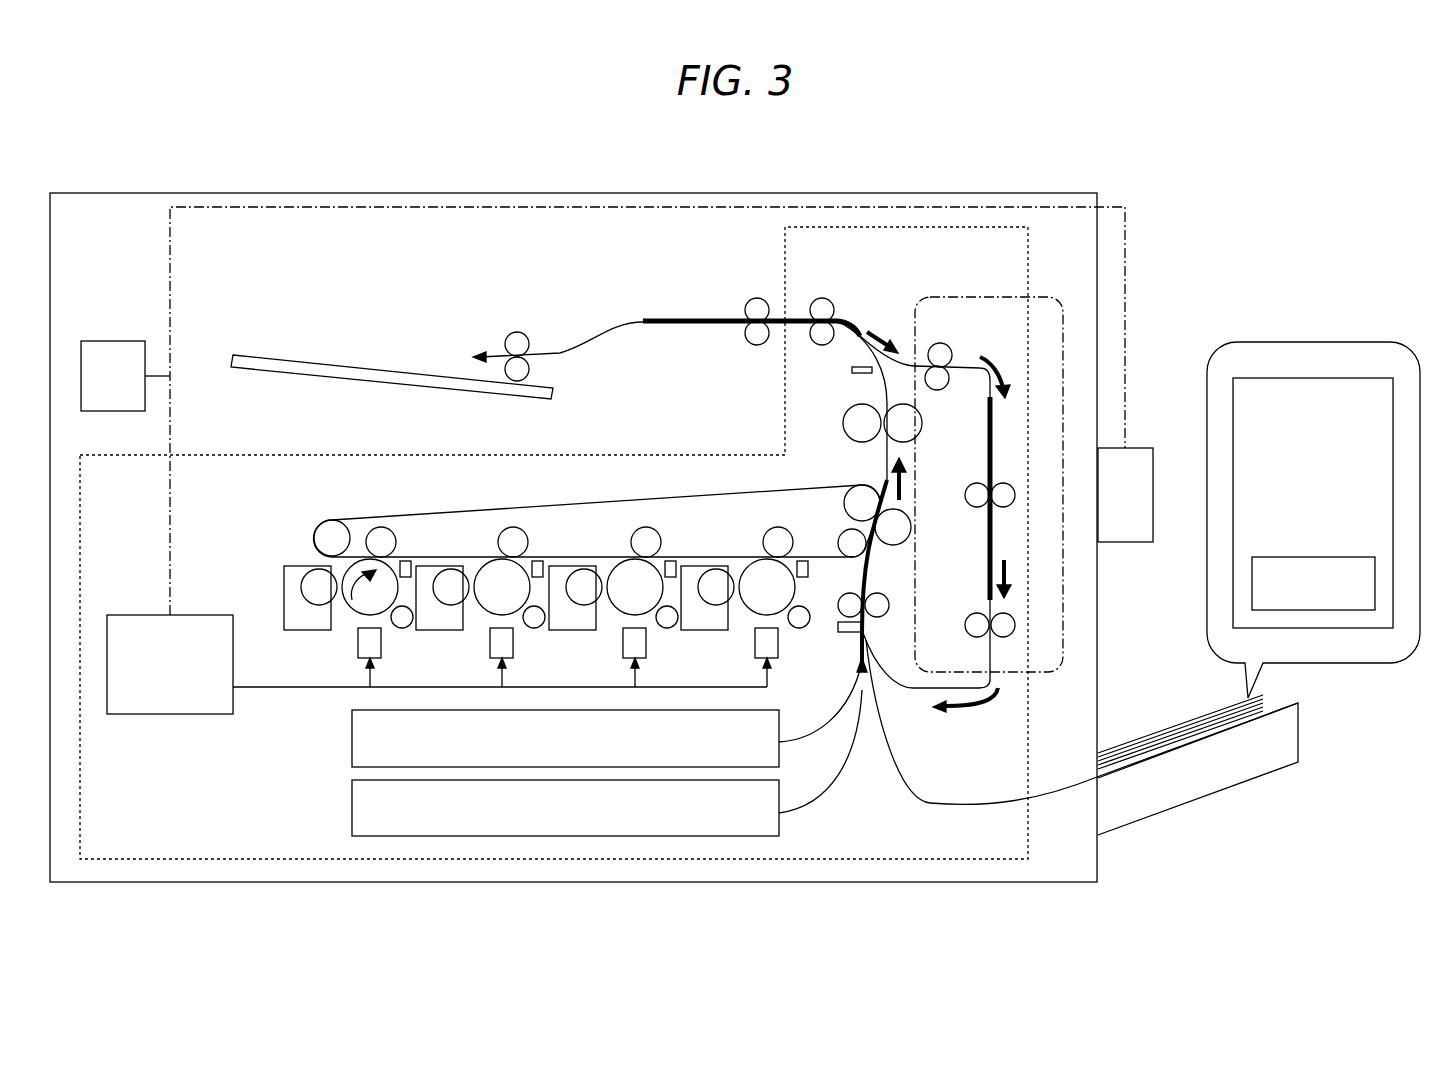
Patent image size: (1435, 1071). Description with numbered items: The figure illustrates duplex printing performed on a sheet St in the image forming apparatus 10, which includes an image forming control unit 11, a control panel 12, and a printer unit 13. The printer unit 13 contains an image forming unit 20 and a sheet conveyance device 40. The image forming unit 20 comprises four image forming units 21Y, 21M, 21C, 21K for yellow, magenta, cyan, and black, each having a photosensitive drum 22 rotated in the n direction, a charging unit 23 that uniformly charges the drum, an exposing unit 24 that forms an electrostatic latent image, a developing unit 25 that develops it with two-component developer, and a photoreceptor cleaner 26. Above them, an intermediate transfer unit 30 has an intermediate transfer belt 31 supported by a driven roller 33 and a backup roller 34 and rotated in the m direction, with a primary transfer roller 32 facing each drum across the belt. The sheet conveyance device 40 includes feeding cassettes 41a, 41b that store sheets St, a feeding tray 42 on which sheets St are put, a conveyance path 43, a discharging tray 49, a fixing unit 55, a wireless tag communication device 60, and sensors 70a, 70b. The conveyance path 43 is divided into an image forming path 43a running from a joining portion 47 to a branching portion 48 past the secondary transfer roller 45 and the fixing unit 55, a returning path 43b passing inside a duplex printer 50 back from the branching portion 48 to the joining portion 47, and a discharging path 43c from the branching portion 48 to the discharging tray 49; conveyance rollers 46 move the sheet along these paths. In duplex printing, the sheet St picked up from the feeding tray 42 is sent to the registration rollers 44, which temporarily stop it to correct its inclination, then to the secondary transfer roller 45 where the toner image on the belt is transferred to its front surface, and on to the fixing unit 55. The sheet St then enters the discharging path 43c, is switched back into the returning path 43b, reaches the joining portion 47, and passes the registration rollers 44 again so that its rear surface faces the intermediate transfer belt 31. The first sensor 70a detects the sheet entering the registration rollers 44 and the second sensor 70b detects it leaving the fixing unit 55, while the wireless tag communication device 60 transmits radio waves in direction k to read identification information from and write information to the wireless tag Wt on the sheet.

The image forming apparatus 10 is at (208, 173).
The image forming control unit 11 is at (165, 715).
The control panel 12 is at (113, 340).
The printer unit 13 is at (118, 455).
The image forming unit 20 is at (510, 659).
The image forming unit 21Y is at (340, 579).
The image forming unit 21M is at (527, 640).
The image forming unit 21C is at (658, 640).
The image forming unit 21K is at (741, 640).
The photosensitive drum 22 is at (345, 572).
The charging unit 23 is at (412, 624).
The exposing unit 24 is at (357, 645).
The developing unit 25 is at (283, 590).
The photoreceptor cleaner 26 is at (405, 560).
The intermediate transfer unit 30 is at (569, 483).
The intermediate transfer belt 31 is at (642, 500).
The primary transfer roller 32 is at (382, 527).
The driven roller 33 is at (320, 524).
The backup roller 34 is at (842, 503).
The sheet conveyance device 40 is at (782, 536).
The feeding cassette 41a is at (351, 740).
The feeding cassette 41b is at (351, 812).
The feeding tray 42 is at (1198, 742).
The conveyance path 43 is at (915, 705).
The image forming path 43a is at (884, 466).
The returning path 43b is at (897, 350).
The discharging path 43c is at (775, 318).
The registration rollers 44 is at (890, 604).
The secondary transfer roller 45 is at (893, 546).
The conveyance rollers 46 is at (970, 507).
The joining portion 47 is at (868, 640).
The branching portion 48 is at (858, 333).
The discharging tray 49 is at (365, 362).
The duplex printer 50 is at (1005, 456).
The fixing unit 55 is at (870, 395).
The wireless tag communication device 60 is at (1135, 447).
The first sensor 70a is at (847, 633).
The second sensor 70b is at (850, 368).
The sheet St is at (1180, 725).
The wireless tag Wt is at (1355, 630).
The direction k is at (1042, 495).
The m direction m is at (463, 495).
The N direction n is at (357, 590).